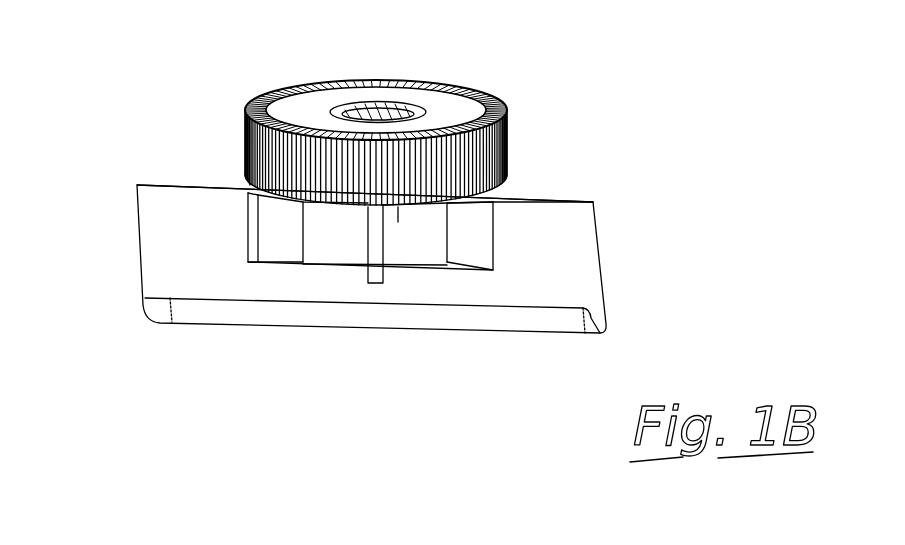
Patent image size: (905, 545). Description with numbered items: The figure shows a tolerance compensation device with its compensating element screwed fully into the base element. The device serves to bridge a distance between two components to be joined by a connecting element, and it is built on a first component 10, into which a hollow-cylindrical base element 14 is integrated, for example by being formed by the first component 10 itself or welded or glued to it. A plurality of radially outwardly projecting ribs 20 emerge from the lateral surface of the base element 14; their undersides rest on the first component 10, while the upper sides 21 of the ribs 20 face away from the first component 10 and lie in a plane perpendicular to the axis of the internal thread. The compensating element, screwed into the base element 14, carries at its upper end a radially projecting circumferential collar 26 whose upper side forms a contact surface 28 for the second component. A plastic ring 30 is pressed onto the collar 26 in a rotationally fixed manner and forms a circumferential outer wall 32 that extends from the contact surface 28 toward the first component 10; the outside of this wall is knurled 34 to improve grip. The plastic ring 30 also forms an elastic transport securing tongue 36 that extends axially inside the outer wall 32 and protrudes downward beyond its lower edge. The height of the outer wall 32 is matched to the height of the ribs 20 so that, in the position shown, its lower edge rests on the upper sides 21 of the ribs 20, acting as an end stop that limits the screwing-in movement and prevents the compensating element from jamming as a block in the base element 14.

The first component 10 is at (168, 270).
The base element 14 is at (340, 240).
The ribs 20 is at (255, 248).
The upper sides of the ribs 21 is at (498, 195).
The collar 26 is at (313, 103).
The contact surface 28 is at (443, 115).
The plastic ring 30 is at (359, 112).
The outer wall 32 is at (505, 148).
The knurling 34 is at (247, 173).
The transport securing tongue 36 is at (402, 217).